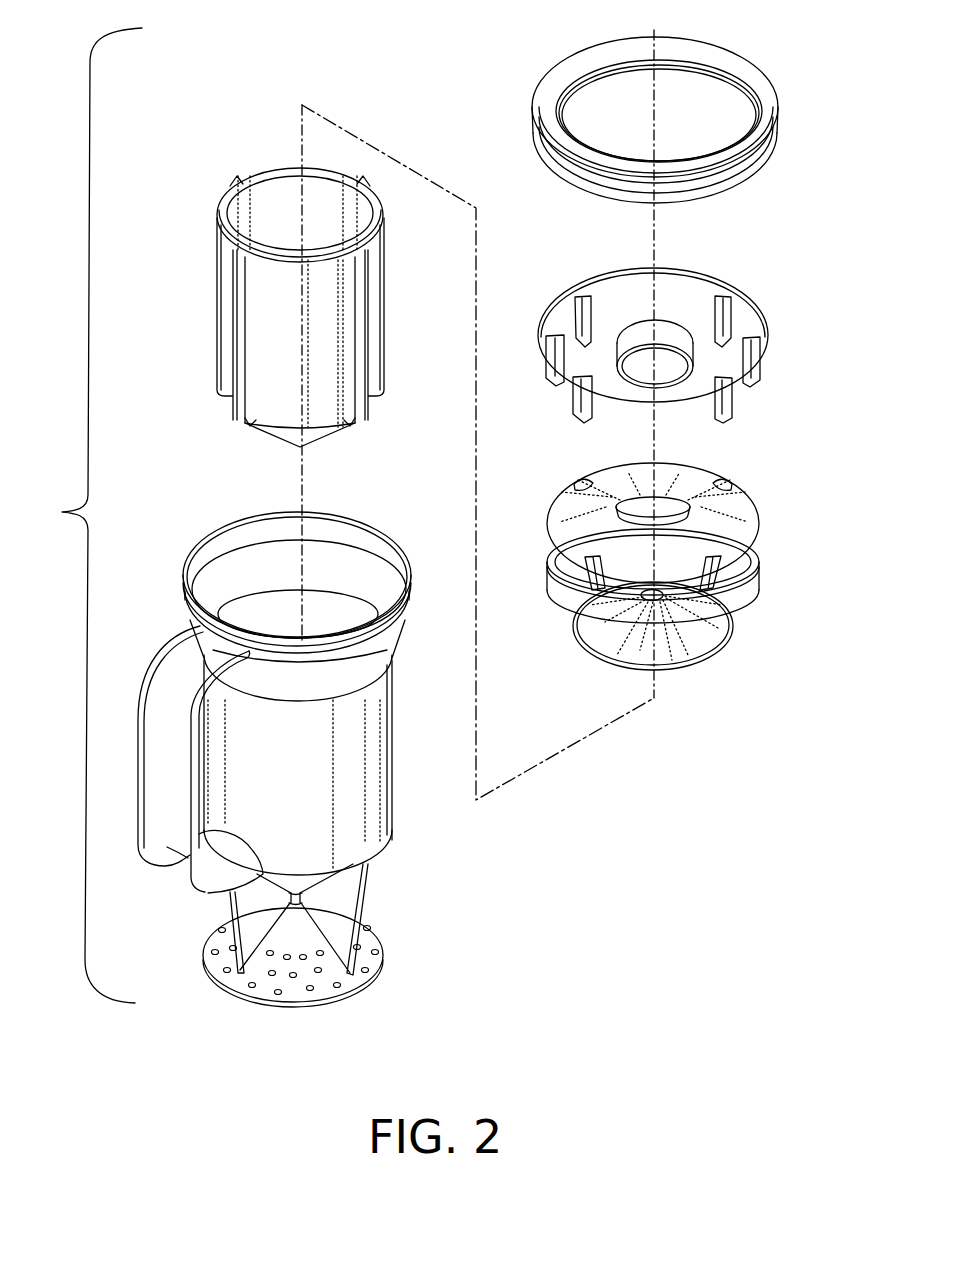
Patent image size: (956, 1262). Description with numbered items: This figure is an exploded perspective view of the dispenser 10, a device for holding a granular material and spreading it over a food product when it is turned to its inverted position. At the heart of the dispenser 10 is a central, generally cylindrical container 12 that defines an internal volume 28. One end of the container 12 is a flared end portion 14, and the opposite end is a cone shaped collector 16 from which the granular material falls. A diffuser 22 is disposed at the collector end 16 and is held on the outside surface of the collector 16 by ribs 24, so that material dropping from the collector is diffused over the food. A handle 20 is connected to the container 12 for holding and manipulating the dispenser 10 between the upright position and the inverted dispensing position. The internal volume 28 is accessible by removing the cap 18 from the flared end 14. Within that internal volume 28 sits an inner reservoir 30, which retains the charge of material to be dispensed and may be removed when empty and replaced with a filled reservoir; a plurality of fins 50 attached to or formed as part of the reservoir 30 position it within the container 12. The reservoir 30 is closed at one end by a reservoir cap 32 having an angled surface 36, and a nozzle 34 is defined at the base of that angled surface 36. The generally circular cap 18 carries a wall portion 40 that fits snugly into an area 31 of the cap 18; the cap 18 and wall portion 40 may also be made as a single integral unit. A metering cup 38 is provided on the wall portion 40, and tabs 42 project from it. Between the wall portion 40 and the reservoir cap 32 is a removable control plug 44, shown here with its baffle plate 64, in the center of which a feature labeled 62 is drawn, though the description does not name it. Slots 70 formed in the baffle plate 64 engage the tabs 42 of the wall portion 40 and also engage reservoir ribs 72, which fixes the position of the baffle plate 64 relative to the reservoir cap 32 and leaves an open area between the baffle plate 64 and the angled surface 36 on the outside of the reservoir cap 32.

The dispenser 10 is at (85, 515).
The container 12 is at (353, 822).
The flared end portion 14 is at (372, 668).
The cone shaped collector 16 is at (307, 883).
The cap 18 is at (686, 109).
The handle 20 is at (182, 663).
The diffuser 22 is at (365, 970).
The ribs 24 is at (333, 905).
The internal volume 28 is at (333, 612).
The inner reservoir 30 is at (293, 260).
The area 31 is at (720, 125).
The reservoir cap 32 is at (696, 575).
The nozzle 34 is at (699, 667).
The angled surface 36 is at (677, 643).
The metering cup 38 is at (672, 335).
The wall portion 40 is at (685, 327).
The tabs 42 is at (727, 413).
The control plug 44 is at (706, 590).
The fins 50 is at (363, 380).
The opening 62 is at (657, 468).
The baffle plate 64 is at (692, 506).
The slots 70 is at (586, 488).
The reservoir ribs 72 is at (727, 577).